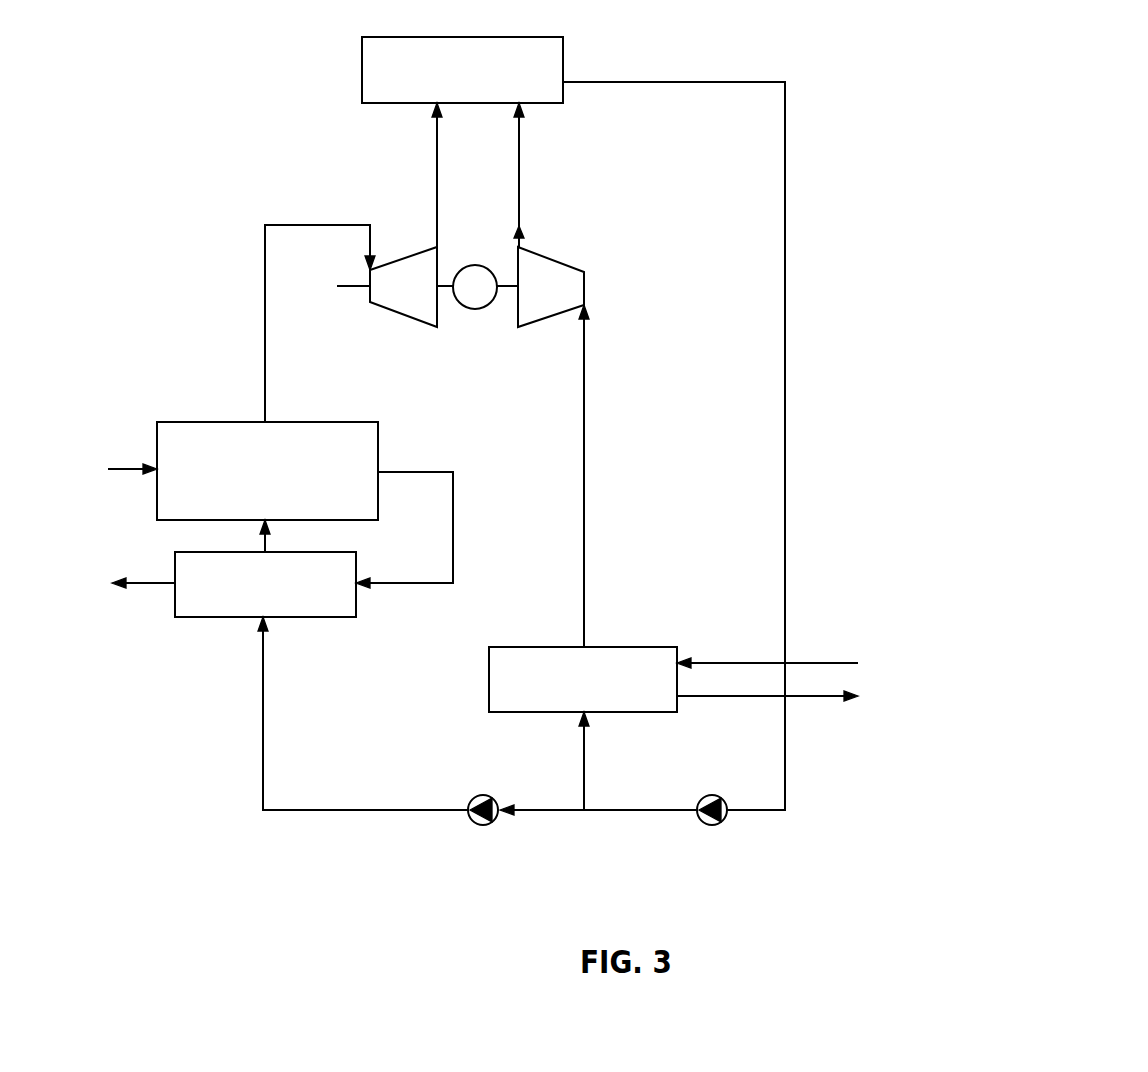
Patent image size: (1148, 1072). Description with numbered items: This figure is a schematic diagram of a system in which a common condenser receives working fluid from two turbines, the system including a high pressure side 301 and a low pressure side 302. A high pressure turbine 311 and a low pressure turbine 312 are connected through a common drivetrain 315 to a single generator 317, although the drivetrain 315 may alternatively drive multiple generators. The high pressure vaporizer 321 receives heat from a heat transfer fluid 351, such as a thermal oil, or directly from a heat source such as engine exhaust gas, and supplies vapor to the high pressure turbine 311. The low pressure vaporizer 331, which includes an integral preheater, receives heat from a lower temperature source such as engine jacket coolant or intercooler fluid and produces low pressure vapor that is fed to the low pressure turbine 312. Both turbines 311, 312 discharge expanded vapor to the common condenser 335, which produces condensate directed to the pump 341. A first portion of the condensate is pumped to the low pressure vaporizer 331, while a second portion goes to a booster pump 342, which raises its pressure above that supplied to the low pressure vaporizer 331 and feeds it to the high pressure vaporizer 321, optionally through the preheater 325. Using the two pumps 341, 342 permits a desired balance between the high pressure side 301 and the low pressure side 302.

The common condenser 335 is at (562, 37).
The high pressure turbine 311 is at (378, 266).
The low pressure turbine 312 is at (584, 272).
The common drivetrain 315 is at (512, 288).
The generator 317 is at (465, 266).
The high pressure vaporizer 321 is at (378, 424).
The preheater 325 is at (356, 553).
The low pressure vaporizer 331 is at (658, 647).
The pump 341 is at (708, 824).
The booster pump 342 is at (479, 824).
The heat transfer fluid 351 is at (155, 400).
The high pressure side 301 is at (434, 866).
The low pressure side 302 is at (674, 868).